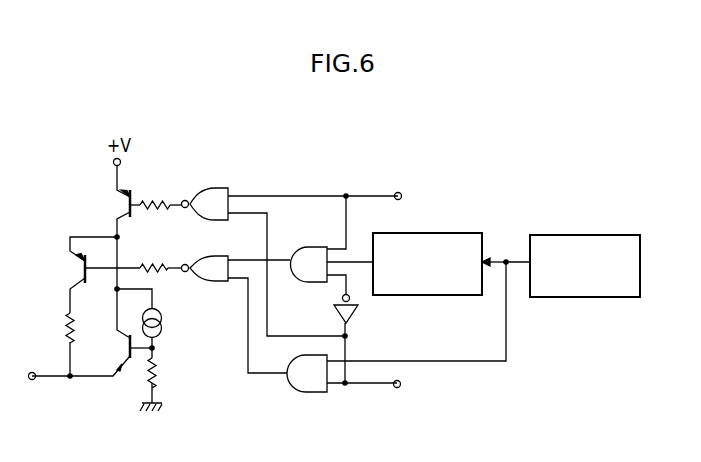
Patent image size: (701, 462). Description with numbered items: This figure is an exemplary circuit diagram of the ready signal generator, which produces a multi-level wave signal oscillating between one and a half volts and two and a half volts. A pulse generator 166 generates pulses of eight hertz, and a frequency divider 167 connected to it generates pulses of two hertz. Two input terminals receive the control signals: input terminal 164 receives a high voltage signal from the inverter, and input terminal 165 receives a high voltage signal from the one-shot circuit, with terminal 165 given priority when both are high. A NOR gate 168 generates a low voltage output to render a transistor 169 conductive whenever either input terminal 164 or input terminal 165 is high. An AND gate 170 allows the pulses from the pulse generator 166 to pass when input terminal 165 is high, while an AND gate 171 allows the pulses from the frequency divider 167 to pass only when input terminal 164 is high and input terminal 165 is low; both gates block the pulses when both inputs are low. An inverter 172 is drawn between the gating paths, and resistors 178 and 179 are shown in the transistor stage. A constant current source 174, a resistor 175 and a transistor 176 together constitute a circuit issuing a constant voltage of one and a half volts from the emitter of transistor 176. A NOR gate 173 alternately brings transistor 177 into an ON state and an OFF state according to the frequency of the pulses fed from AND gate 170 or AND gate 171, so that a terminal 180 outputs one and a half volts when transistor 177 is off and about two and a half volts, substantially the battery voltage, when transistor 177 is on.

The input terminal 164 is at (399, 192).
The input terminal 165 is at (419, 388).
The pulse generator 166 is at (553, 235).
The frequency divider 167 is at (420, 233).
The NOR gate 168 is at (217, 188).
The transistor 169 is at (132, 190).
The AND gate 170 is at (295, 393).
The AND gate 171 is at (312, 246).
The inverter 172 is at (357, 307).
The NOR gate 173 is at (205, 288).
The constant current source 174 is at (161, 313).
The resistor 175 is at (155, 362).
The transistor 176 is at (126, 368).
The transistor 177 is at (78, 266).
The resistor 178 is at (143, 266).
The resistor 179 is at (68, 325).
The terminal 180 is at (37, 393).